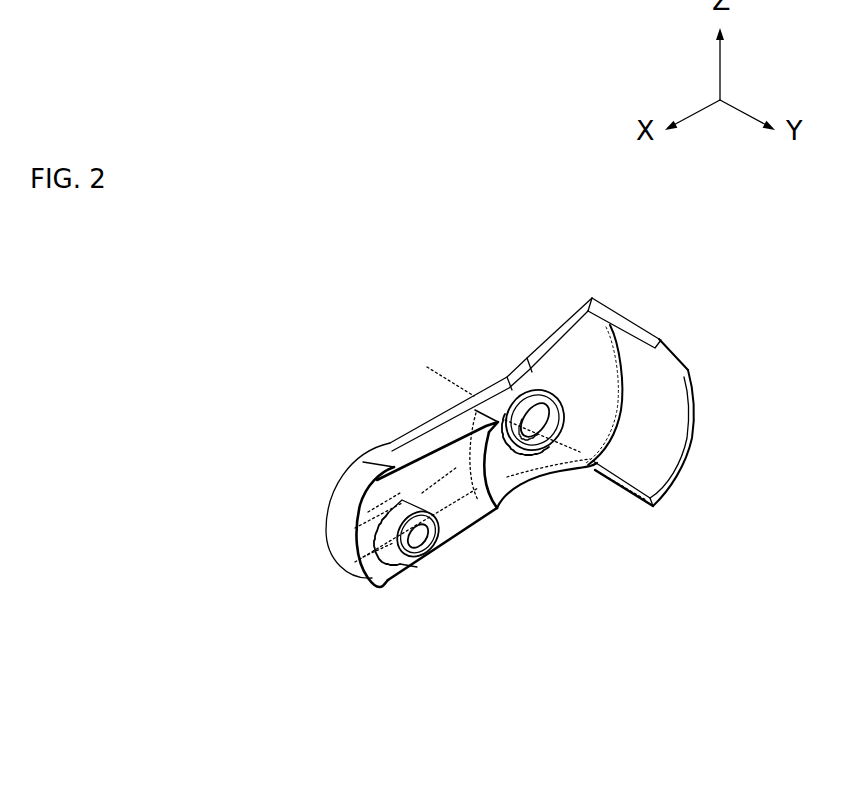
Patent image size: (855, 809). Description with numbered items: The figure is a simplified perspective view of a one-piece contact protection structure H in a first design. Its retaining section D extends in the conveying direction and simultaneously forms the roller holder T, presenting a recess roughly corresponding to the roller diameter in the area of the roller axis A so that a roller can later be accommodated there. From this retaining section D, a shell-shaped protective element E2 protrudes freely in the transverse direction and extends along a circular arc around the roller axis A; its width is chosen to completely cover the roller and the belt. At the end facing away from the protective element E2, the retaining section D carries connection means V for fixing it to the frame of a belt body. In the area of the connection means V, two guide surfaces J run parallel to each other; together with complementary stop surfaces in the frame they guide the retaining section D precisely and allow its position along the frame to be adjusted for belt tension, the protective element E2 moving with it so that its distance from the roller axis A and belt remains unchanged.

The contact protection structure H is at (512, 474).
The roller holder T is at (512, 474).
The roller axis A is at (440, 373).
The guide surfaces J is at (393, 444).
The retaining section D is at (577, 415).
The connection means V is at (388, 594).
The protective element E2 is at (686, 383).